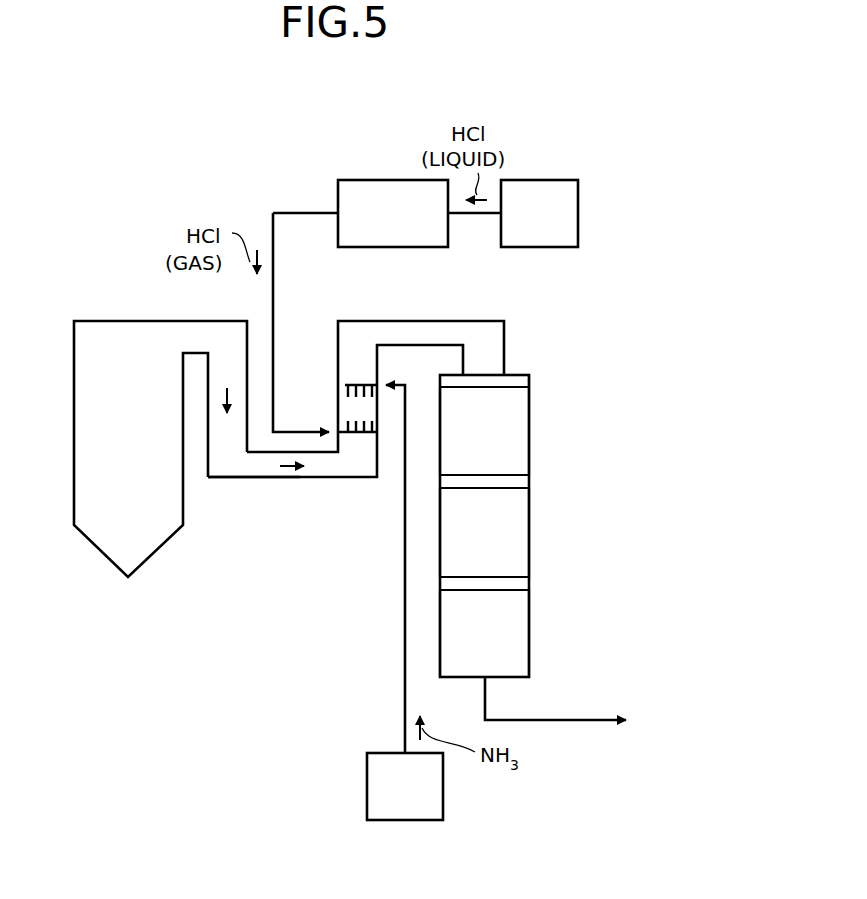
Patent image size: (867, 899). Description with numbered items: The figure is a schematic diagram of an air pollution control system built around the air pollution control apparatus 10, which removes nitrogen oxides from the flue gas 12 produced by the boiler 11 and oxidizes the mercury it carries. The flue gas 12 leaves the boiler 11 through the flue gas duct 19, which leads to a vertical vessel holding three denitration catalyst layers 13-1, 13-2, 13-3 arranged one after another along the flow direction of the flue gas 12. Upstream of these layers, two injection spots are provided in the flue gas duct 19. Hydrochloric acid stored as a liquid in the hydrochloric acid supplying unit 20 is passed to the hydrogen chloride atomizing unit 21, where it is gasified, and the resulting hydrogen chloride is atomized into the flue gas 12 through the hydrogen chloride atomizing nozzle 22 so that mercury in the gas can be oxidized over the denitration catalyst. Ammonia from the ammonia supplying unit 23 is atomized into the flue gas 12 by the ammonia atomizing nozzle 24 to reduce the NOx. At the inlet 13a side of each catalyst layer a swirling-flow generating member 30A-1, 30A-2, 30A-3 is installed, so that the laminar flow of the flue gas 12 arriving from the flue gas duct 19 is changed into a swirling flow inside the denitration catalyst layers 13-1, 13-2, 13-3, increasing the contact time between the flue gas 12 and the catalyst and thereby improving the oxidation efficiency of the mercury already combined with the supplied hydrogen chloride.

The air pollution control apparatus 10 is at (537, 506).
The boiler 11 is at (122, 320).
The flue gas 12 is at (288, 473).
The flue gas duct 19 is at (230, 478).
The hydrochloric acid supplying unit 20 is at (545, 180).
The hydrogen chloride atomizing unit 21 is at (365, 180).
The hydrogen chloride atomizing nozzle 22 is at (345, 425).
The ammonia supplying unit 23 is at (405, 822).
The ammonia atomizing nozzle 24 is at (345, 388).
The inlet 13a is at (505, 385).
The denitration catalyst layer 13-1 is at (529, 440).
The denitration catalyst layer 13-2 is at (529, 527).
The denitration catalyst layer 13-3 is at (529, 627).
The swirling-flow generating member 30A-1 is at (529, 380).
The swirling-flow generating member 30A-2 is at (529, 480).
The swirling-flow generating member 30A-3 is at (529, 583).